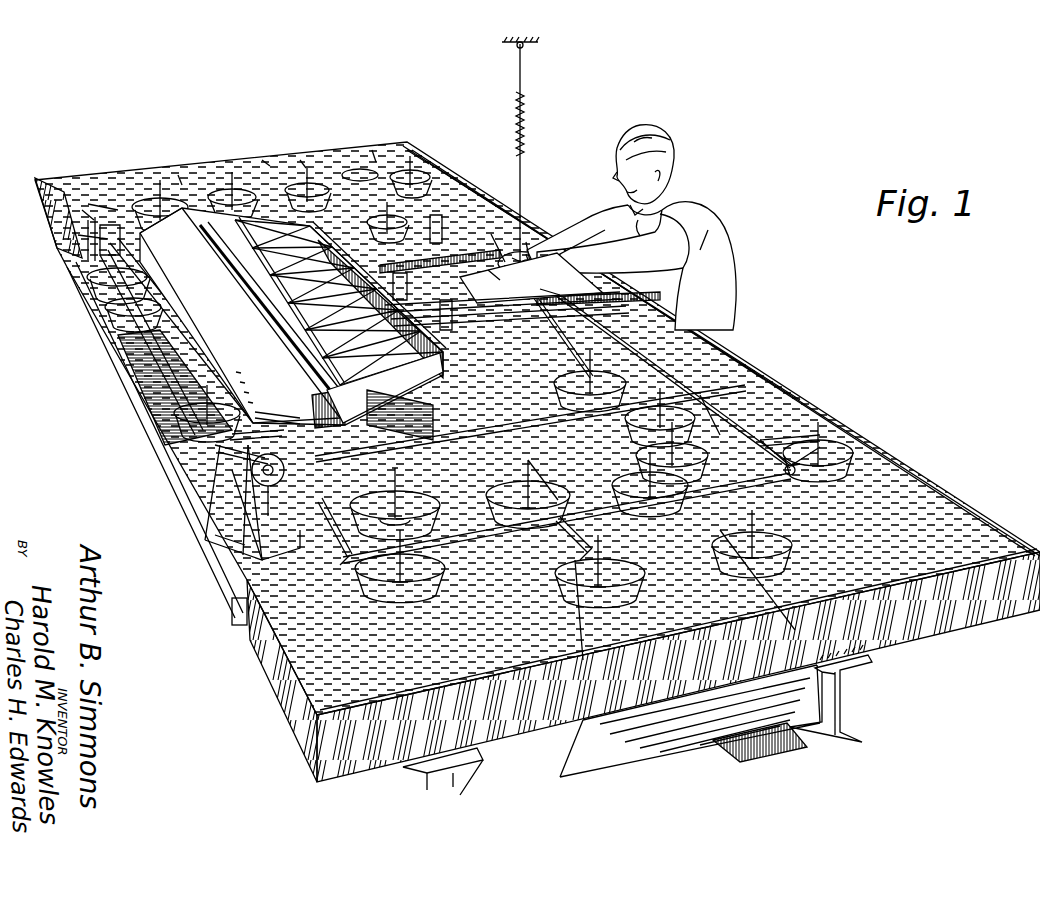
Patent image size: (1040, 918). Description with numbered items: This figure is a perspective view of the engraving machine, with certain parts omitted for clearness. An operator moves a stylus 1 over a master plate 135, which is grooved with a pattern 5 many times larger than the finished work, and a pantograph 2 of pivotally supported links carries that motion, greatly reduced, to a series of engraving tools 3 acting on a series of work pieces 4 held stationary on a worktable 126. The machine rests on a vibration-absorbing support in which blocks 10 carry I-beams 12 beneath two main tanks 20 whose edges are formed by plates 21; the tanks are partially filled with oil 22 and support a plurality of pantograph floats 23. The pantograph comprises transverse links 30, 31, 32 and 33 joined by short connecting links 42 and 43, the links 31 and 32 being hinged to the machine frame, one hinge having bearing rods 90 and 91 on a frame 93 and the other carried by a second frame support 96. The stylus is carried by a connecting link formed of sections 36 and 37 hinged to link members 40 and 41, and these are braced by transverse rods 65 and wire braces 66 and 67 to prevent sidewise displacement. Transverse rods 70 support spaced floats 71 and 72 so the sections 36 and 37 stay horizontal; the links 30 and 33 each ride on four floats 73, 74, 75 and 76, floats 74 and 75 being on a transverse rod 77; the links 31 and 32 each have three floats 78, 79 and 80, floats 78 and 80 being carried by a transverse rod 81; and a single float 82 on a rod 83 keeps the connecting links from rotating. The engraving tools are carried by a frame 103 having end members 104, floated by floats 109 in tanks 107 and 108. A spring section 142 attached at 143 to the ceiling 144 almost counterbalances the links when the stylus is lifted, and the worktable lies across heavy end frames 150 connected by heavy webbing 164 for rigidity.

The stylus 1 is at (502, 258).
The pantograph 2 is at (710, 362).
The engraving tools 3 is at (252, 400).
The work pieces 4 is at (238, 364).
The pattern 5 is at (508, 288).
The blocks 10 is at (788, 748).
The I-beams 12 is at (840, 702).
The main tanks 20 is at (348, 152).
The plates 21 is at (145, 170).
The oil 22 is at (236, 162).
The pantograph floats 23 is at (312, 156).
The transverse link 30 is at (266, 164).
The transverse link 31 is at (194, 166).
The transverse link 32 is at (244, 551).
The transverse link 33 is at (630, 560).
The connecting link section 36 is at (370, 156).
The connecting link section 37 is at (772, 435).
The link member 40 is at (500, 242).
The link member 41 is at (698, 348).
The connecting link 42 is at (84, 214).
The connecting link 43 is at (248, 606).
The transverse rods 65 is at (450, 180).
The wire brace 66 is at (384, 146).
The wire brace 67 is at (468, 254).
The transverse rods 70 is at (400, 158).
The float 71 is at (806, 452).
The float 72 is at (650, 484).
The float 73 is at (752, 531).
The float 74 is at (528, 494).
The float 75 is at (600, 562).
The float 76 is at (381, 550).
The transverse rod 77 is at (583, 660).
The float 78 is at (590, 381).
The float 79 is at (660, 417).
The float 80 is at (678, 439).
The transverse rod 81 is at (722, 540).
The float 82 is at (403, 496).
The rod 83 is at (395, 504).
The bearing rod 90 is at (252, 468).
The bearing rod 91 is at (222, 500).
The frame 93 is at (236, 526).
The second frame support 96 is at (80, 244).
The frame 103 is at (152, 285).
The end members 104 is at (216, 456).
The tank 107 is at (82, 290).
The tank 108 is at (230, 436).
The floats 109 is at (176, 317).
The worktable 126 is at (138, 383).
The master plate 135 is at (507, 252).
The spring section 142 is at (524, 106).
The attachment point 143 is at (530, 44).
The ceiling 144 is at (514, 46).
The end frames 150 is at (432, 327).
The webbing 164 is at (248, 290).